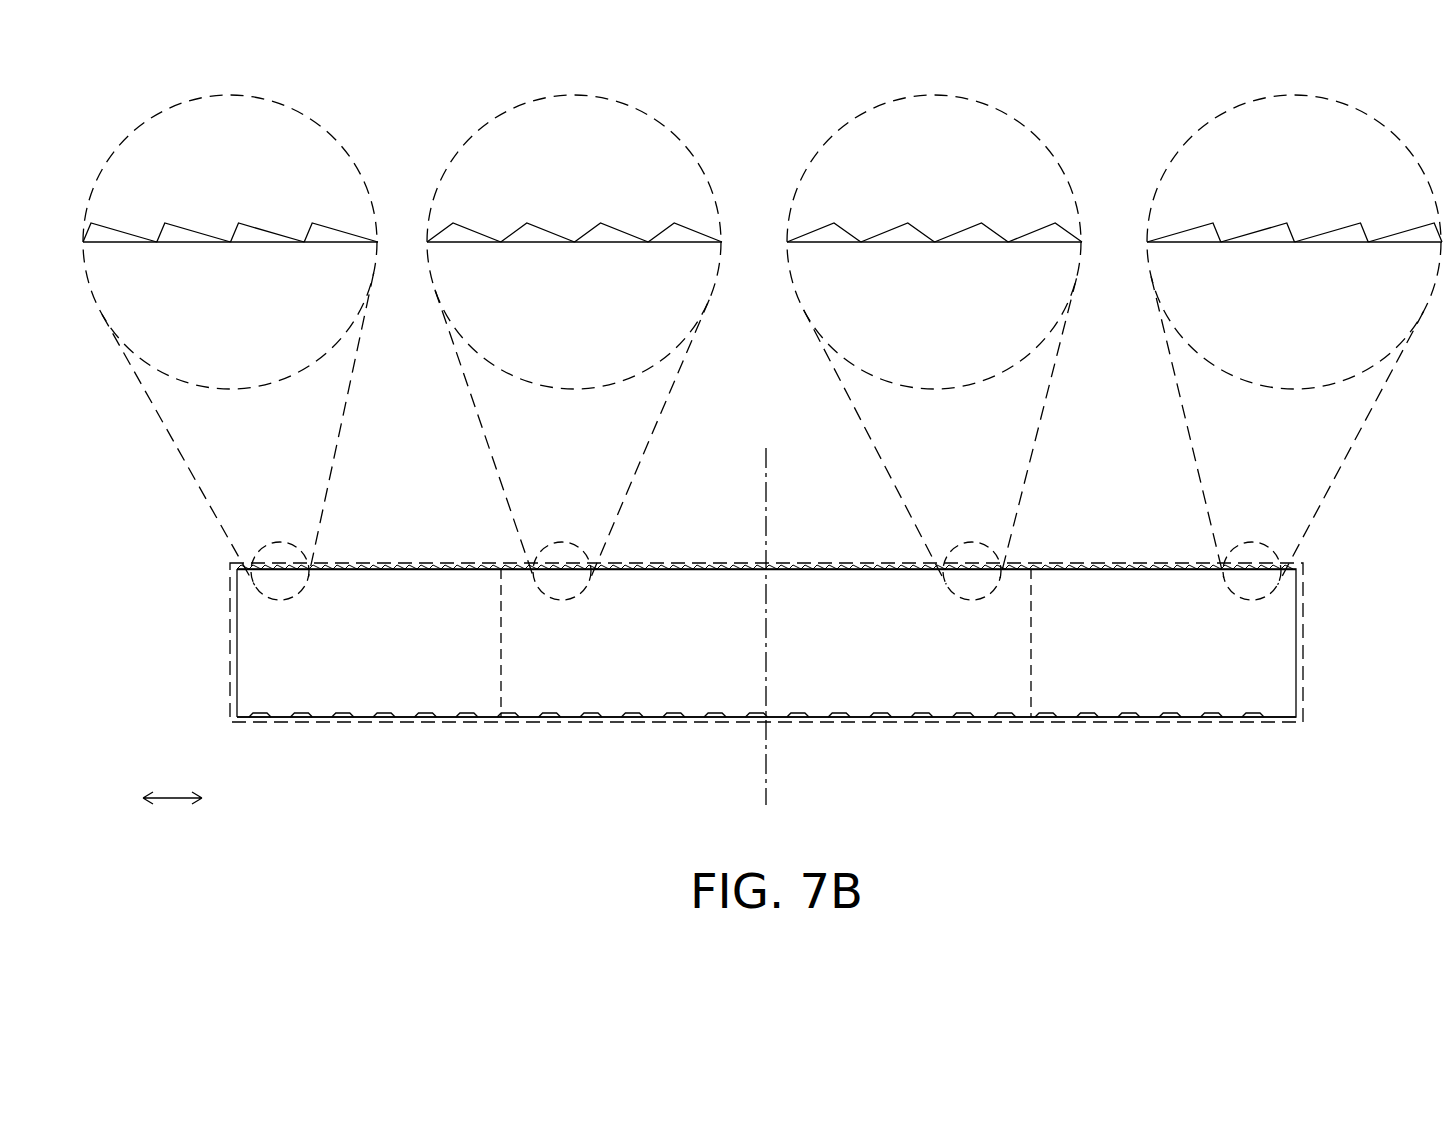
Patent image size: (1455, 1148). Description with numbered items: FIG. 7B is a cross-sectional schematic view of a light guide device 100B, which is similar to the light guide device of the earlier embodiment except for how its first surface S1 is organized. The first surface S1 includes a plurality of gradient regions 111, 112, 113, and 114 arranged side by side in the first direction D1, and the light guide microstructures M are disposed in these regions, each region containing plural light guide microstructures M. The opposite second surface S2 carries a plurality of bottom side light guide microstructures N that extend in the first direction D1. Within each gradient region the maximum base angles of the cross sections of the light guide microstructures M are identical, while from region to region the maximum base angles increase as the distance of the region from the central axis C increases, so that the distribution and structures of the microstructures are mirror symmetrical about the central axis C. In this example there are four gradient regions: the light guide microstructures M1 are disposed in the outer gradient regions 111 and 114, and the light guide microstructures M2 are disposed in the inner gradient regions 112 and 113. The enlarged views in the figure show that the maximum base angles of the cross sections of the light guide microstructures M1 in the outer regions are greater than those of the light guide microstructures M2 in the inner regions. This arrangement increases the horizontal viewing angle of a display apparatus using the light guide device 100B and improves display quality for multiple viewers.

The light guide device 100B is at (1452, 836).
The gradient region 111 is at (353, 723).
The gradient region 112 is at (648, 723).
The gradient region 113 is at (910, 723).
The gradient region 114 is at (1160, 723).
The first surface S1 is at (1088, 566).
The second surface S2 is at (1240, 718).
The light guide microstructures M is at (1160, 565).
The light guide microstructures M1 is at (193, 233).
The light guide microstructures M2 is at (545, 230).
The bottom side light guide microstructures N is at (1096, 715).
The central axis C is at (768, 608).
The first direction D1 is at (172, 819).